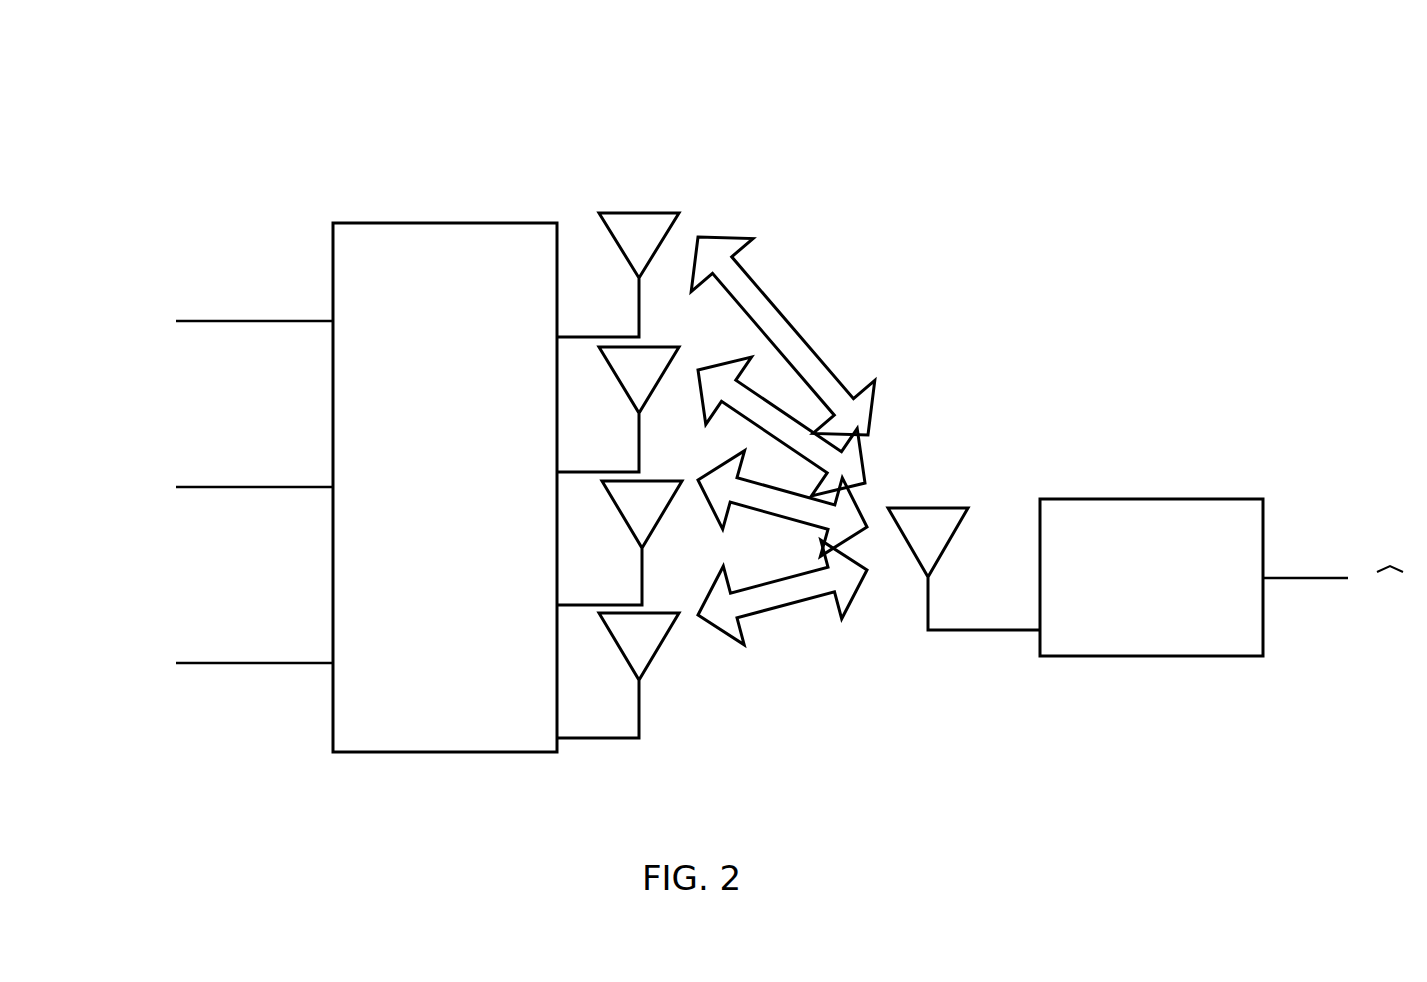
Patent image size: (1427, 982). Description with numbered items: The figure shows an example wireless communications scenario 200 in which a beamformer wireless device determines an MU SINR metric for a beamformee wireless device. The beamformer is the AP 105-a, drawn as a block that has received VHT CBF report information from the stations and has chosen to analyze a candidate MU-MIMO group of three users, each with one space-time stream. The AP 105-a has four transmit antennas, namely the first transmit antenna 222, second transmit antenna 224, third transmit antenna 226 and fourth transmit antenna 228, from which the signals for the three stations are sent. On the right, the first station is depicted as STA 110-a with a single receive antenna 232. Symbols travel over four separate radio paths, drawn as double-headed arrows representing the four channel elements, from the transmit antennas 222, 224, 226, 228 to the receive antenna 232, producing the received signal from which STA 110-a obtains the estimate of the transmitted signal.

The wireless communications scenario 200 is at (1327, 64).
The AP 105-a is at (445, 487).
The STA 110-a is at (1151, 577).
The first transmit antenna 222 is at (618, 275).
The second transmit antenna 224 is at (618, 409).
The third transmit antenna 226 is at (619, 543).
The fourth transmit antenna 228 is at (618, 675).
The receive antenna 232 is at (964, 569).